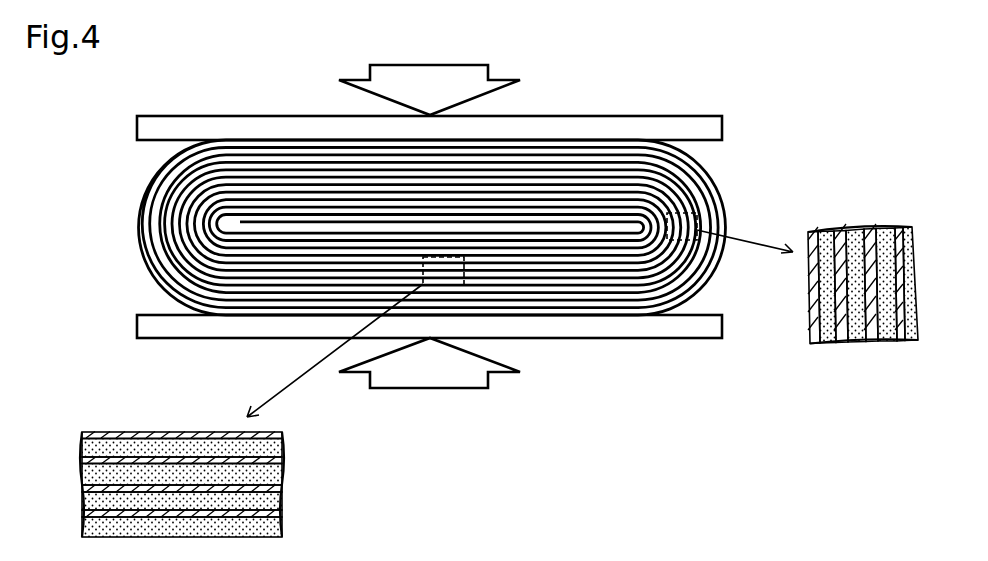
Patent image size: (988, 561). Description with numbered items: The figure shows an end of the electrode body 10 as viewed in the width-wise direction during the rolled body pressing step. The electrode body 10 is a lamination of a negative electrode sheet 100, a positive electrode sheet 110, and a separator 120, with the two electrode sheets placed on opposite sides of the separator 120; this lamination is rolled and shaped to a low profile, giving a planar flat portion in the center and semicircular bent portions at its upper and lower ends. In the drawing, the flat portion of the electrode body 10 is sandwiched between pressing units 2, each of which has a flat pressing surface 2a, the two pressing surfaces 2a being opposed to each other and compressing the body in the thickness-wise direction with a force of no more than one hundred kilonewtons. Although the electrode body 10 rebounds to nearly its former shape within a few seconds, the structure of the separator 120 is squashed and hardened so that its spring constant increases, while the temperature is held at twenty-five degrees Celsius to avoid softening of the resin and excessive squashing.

The pressing unit 2 is at (734, 92).
The pressing surface 2a is at (706, 140).
The electrode body 10 is at (734, 196).
The negative electrode sheet 100 is at (283, 443).
The positive electrode sheet 110 is at (283, 497).
The separator 120 is at (283, 438).